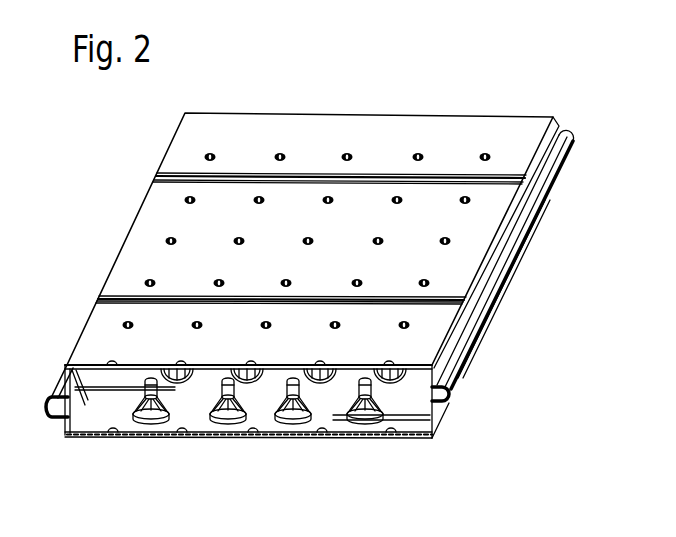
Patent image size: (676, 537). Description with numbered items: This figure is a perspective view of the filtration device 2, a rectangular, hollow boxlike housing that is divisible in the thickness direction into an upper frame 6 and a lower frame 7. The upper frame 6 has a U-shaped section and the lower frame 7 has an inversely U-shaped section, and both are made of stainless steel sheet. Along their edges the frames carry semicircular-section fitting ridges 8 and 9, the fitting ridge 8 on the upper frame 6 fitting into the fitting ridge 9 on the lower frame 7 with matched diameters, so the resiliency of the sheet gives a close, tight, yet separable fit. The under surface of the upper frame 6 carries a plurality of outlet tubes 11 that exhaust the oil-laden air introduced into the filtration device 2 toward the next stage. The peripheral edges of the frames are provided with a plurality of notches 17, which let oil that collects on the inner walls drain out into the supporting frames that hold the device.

The filtration device 2 is at (375, 110).
The upper frame 6 is at (470, 127).
The lower frame 7 is at (413, 436).
The fitting ridge 8 is at (452, 400).
The fitting ridge 9 is at (504, 270).
The outlet tube 11 is at (212, 152).
The notch 17 is at (110, 360).